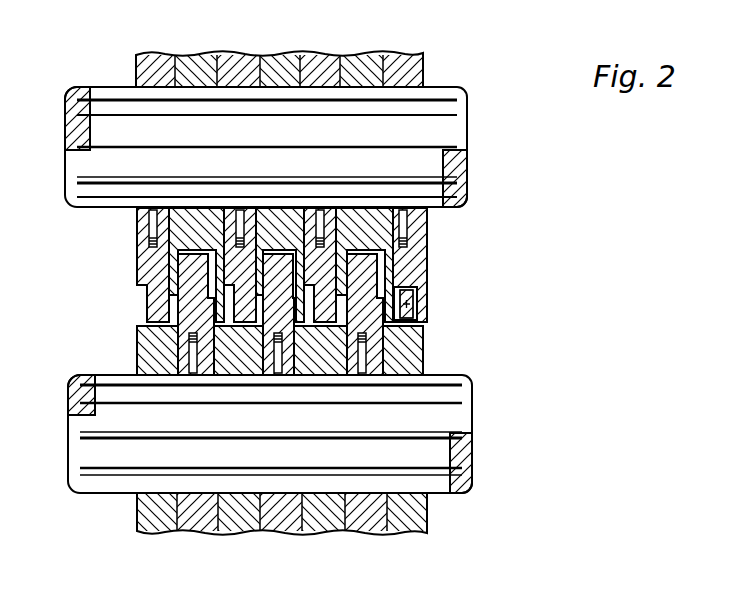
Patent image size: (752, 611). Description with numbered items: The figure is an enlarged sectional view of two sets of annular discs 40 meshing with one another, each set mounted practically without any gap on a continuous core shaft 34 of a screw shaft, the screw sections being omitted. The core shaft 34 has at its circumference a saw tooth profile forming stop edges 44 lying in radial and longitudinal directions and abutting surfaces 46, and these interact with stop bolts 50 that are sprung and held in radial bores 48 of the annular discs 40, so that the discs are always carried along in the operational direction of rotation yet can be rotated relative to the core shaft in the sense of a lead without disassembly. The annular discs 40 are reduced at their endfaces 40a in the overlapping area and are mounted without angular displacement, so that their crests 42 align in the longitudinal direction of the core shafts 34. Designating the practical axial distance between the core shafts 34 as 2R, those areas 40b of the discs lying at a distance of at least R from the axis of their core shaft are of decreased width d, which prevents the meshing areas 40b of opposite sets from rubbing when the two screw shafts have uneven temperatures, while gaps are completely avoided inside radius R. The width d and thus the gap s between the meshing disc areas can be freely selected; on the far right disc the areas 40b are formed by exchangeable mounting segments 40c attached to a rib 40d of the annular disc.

The core shaft 34 is at (437, 118).
The crests 42 is at (273, 207).
The stop edges 44 is at (447, 150).
The abutting surfaces 46 is at (115, 103).
The annular discs 40 is at (235, 365).
The endfaces 40a is at (137, 247).
The meshing areas 40b is at (137, 303).
The exchangeable mounting elements or segments 40c is at (418, 315).
The rib 40d is at (417, 300).
The radial bores 48 is at (197, 343).
The stop bolts 50 is at (412, 222).
The gap s is at (428, 268).
The width d is at (118, 297).
The radius R is at (423, 293).
The axial distance 2R is at (440, 148).